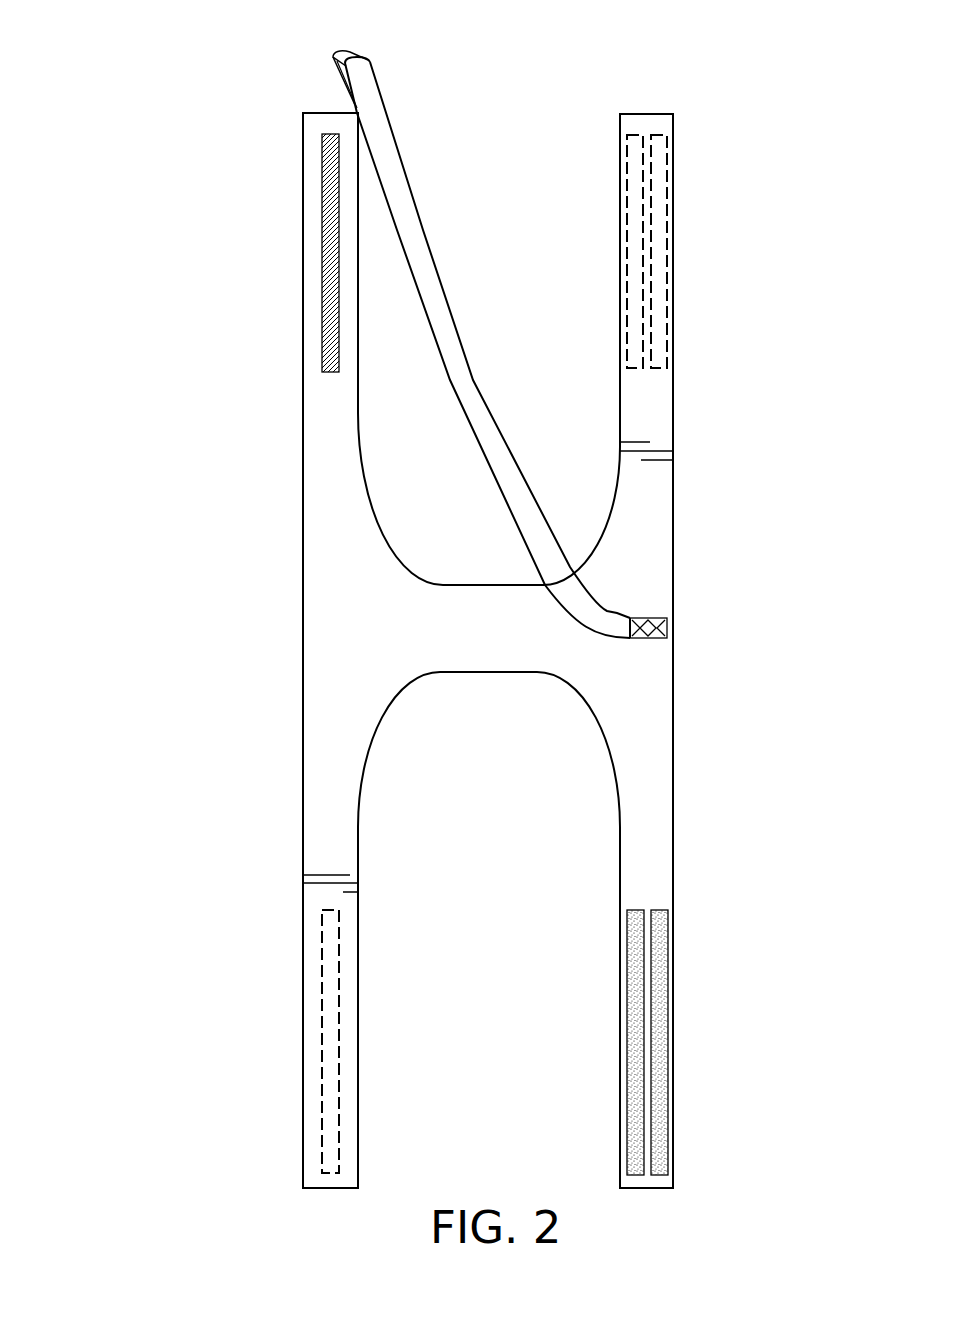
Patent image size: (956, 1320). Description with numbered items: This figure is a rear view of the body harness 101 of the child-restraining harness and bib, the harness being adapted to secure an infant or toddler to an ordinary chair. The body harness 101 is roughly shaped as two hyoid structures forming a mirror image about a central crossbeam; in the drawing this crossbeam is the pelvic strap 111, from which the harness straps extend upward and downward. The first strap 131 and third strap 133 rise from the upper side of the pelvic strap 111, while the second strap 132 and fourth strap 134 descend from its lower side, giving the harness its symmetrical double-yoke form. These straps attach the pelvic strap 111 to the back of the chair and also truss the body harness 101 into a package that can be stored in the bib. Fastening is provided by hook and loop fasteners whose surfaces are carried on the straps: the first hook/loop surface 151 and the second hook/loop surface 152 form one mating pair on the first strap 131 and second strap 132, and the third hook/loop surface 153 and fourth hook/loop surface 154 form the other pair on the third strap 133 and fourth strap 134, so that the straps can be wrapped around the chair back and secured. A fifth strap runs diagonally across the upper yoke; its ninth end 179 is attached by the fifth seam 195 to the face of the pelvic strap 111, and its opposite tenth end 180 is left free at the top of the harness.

The body harness 101 is at (138, 161).
The pelvic strap 111 is at (495, 643).
The first strap 131 is at (657, 498).
The second strap 132 is at (652, 855).
The third strap 133 is at (323, 418).
The fourth strap 134 is at (313, 850).
The first hook/loop surface 151 is at (660, 288).
The second hook/loop surface 152 is at (655, 1027).
The third hook/loop surface 153 is at (323, 272).
The fourth hook/loop surface 154 is at (330, 1035).
The ninth end 179 is at (668, 625).
The tenth end 180 is at (355, 58).
The fifth seam 195 is at (642, 640).